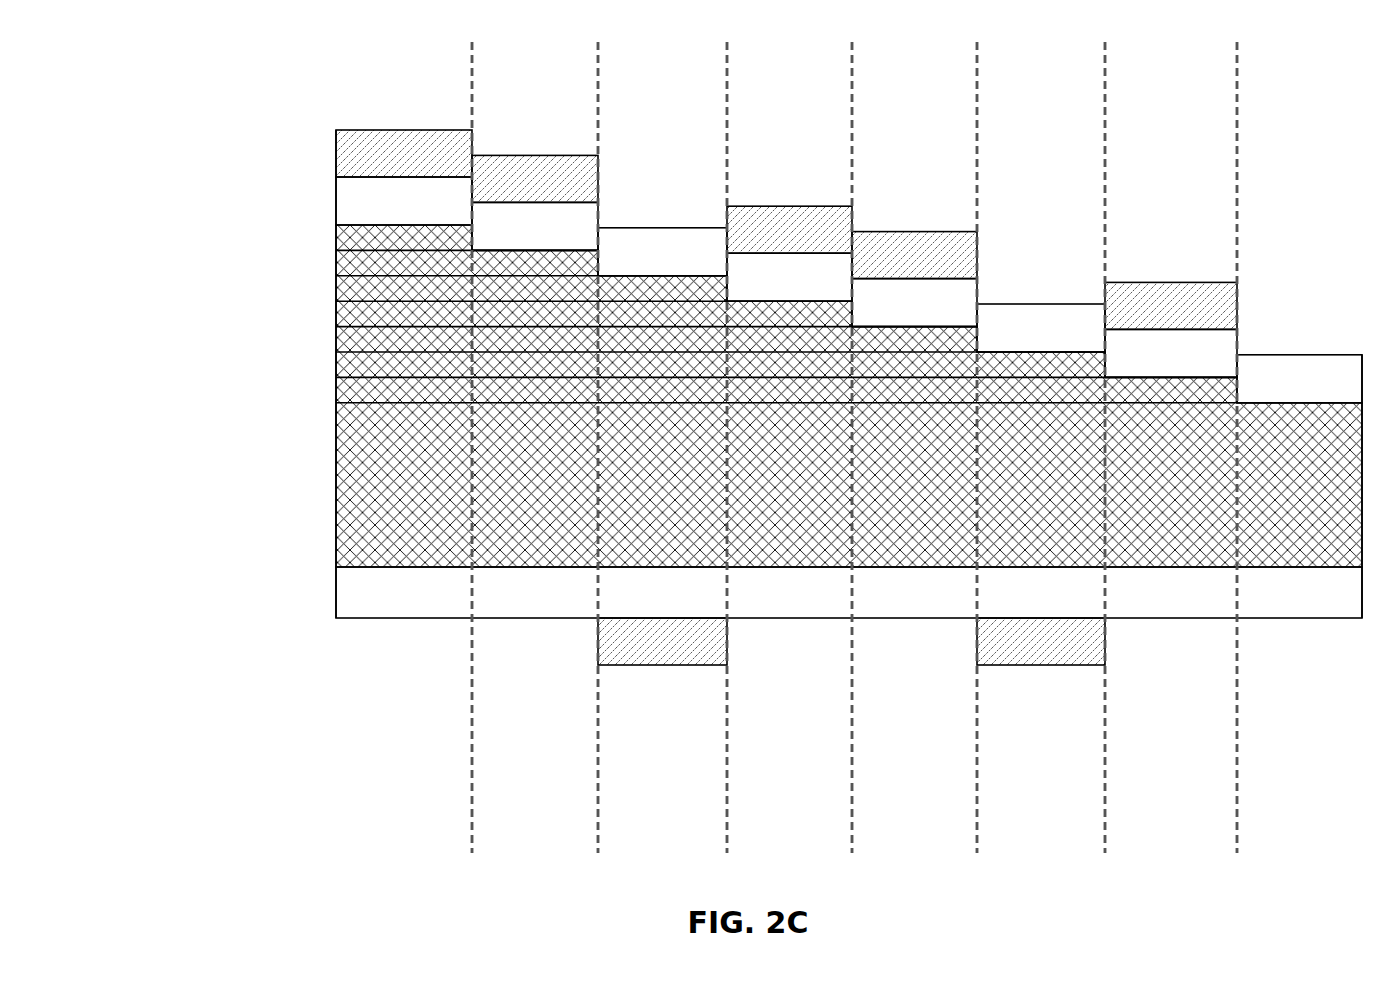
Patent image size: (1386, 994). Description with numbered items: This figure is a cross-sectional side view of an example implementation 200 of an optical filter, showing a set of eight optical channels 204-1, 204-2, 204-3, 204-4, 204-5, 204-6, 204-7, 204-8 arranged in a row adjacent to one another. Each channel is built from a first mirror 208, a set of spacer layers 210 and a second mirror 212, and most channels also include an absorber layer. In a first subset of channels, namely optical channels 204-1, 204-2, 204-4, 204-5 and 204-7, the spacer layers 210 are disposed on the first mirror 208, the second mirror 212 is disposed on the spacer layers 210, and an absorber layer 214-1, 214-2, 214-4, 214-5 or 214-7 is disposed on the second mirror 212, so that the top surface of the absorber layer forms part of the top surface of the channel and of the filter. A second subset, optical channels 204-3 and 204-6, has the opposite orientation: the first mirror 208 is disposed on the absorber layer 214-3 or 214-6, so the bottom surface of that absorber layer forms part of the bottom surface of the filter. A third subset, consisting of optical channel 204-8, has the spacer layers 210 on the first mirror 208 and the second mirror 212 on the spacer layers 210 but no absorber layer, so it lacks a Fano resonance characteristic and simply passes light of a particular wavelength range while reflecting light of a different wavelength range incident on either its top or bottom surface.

The optical filter structure 200 is at (258, 38).
The optical channel 204-1 is at (404, 453).
The optical channel 204-2 is at (535, 453).
The optical channel 204-3 is at (662, 453).
The optical channel 204-4 is at (789, 453).
The optical channel 204-5 is at (914, 453).
The optical channel 204-6 is at (1041, 453).
The optical channel 204-7 is at (1171, 453).
The optical channel 204-8 is at (1299, 453).
The first mirror 208 is at (333, 567).
The set of spacer layers 210 is at (333, 228).
The second mirror 212 is at (333, 180).
The absorber layer 214-1 is at (403, 110).
The absorber layer 214-2 is at (533, 136).
The absorber layer 214-3 is at (660, 598).
The absorber layer 214-4 is at (788, 187).
The absorber layer 214-5 is at (915, 213).
The absorber layer 214-6 is at (1040, 598).
The absorber layer 214-7 is at (1169, 263).